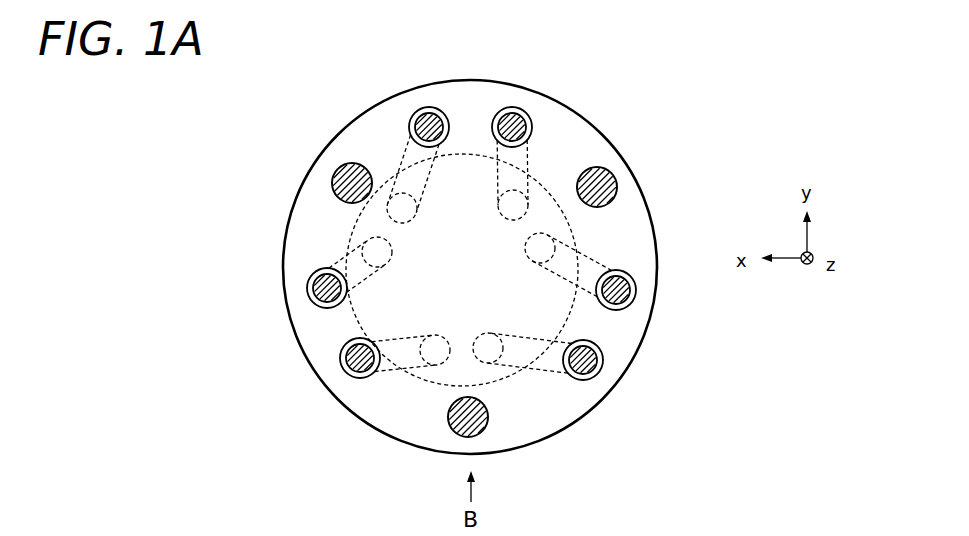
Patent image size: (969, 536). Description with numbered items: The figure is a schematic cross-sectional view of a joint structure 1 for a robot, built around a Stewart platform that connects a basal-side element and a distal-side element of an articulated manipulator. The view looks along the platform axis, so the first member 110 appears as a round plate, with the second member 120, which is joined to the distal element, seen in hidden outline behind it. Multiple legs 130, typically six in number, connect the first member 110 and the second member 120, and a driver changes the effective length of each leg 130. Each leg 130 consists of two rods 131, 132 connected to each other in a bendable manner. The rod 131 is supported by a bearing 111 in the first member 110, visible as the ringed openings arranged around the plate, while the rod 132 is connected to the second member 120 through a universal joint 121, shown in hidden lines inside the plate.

The joint structure 1 is at (240, 157).
The first member 110 is at (307, 207).
The bearing 111 is at (603, 345).
The second member 120 is at (355, 318).
The universal joint 121 is at (488, 363).
The leg 130 is at (702, 416).
The rod 131 is at (602, 370).
The rod 132 is at (542, 370).